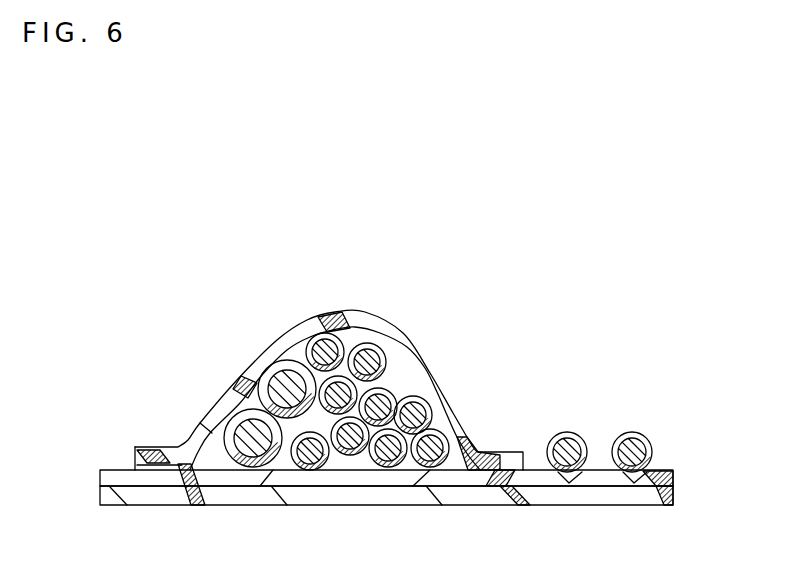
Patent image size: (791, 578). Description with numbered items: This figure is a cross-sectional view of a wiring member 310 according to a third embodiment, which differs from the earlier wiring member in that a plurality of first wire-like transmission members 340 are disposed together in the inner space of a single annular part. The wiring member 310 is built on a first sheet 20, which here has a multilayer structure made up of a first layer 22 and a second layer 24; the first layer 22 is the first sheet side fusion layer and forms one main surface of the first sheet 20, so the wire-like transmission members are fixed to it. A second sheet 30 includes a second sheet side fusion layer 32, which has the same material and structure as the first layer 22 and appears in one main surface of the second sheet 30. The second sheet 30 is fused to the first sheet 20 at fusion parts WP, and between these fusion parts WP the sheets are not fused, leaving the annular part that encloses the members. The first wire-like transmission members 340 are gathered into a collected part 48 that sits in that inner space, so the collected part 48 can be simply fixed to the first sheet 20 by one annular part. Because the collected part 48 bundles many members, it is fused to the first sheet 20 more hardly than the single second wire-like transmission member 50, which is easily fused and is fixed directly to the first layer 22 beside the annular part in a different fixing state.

The wiring member 310 is at (590, 229).
The first sheet 20 is at (437, 487).
The first layer 22 is at (675, 473).
The second layer 24 is at (675, 502).
The second sheet 30 is at (329, 371).
The second sheet side fusion layer 32 is at (390, 328).
The collected part 48 is at (362, 255).
The first wire-like transmission members 340 is at (290, 360).
The second wire-like transmission member 50 is at (567, 431).
The fusion part WP is at (168, 490).